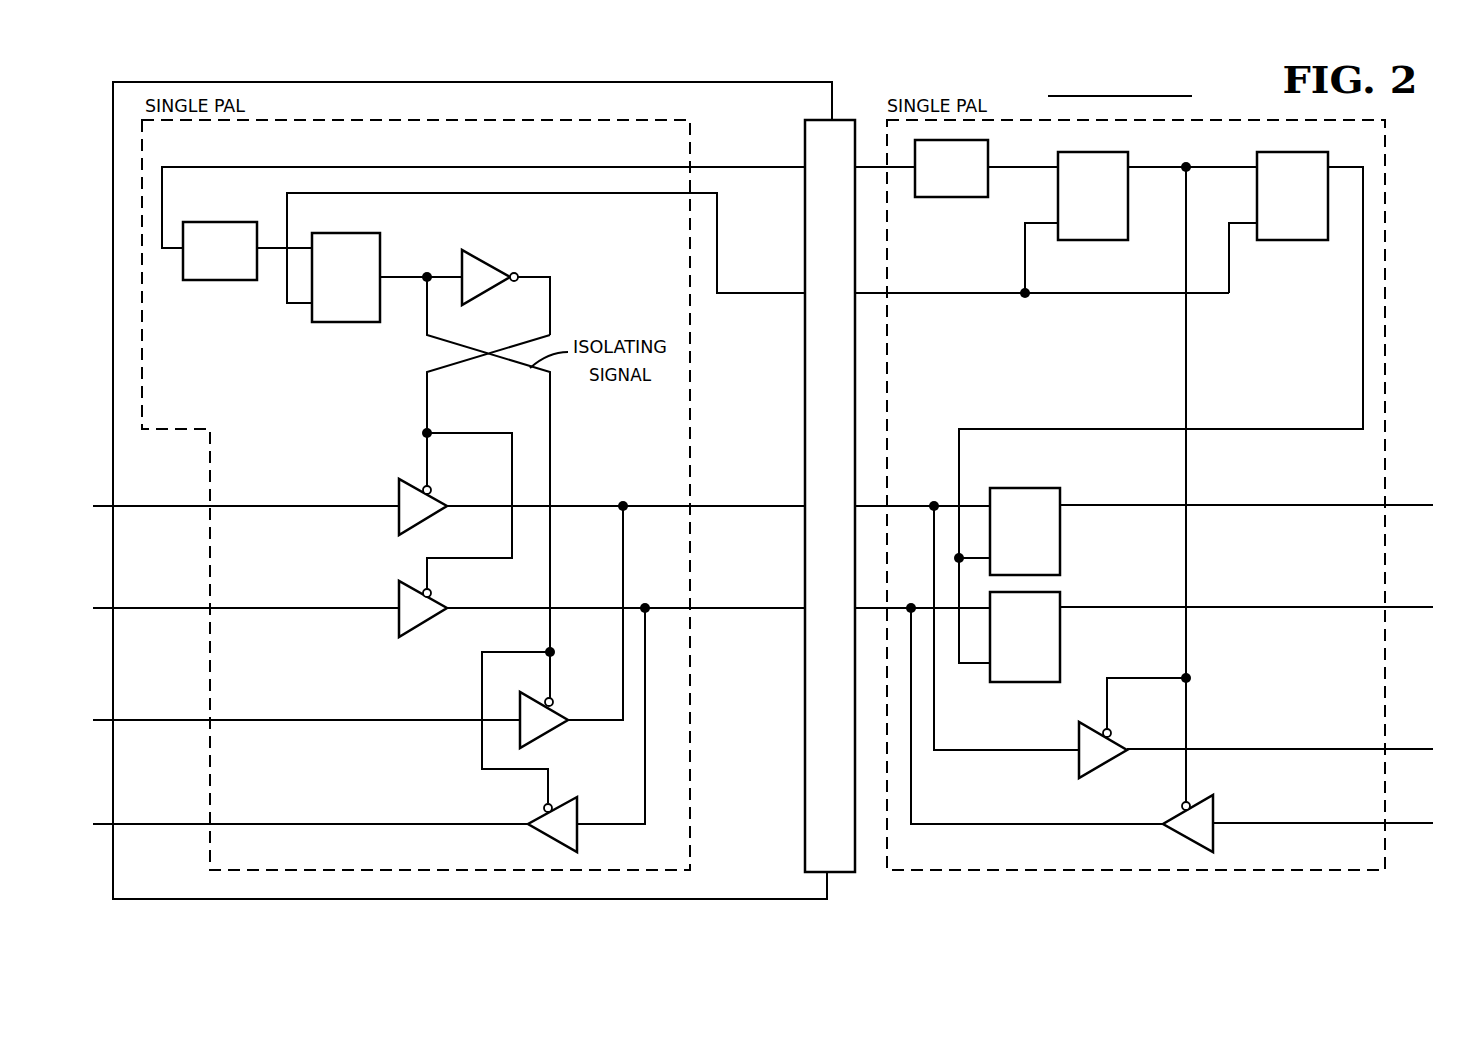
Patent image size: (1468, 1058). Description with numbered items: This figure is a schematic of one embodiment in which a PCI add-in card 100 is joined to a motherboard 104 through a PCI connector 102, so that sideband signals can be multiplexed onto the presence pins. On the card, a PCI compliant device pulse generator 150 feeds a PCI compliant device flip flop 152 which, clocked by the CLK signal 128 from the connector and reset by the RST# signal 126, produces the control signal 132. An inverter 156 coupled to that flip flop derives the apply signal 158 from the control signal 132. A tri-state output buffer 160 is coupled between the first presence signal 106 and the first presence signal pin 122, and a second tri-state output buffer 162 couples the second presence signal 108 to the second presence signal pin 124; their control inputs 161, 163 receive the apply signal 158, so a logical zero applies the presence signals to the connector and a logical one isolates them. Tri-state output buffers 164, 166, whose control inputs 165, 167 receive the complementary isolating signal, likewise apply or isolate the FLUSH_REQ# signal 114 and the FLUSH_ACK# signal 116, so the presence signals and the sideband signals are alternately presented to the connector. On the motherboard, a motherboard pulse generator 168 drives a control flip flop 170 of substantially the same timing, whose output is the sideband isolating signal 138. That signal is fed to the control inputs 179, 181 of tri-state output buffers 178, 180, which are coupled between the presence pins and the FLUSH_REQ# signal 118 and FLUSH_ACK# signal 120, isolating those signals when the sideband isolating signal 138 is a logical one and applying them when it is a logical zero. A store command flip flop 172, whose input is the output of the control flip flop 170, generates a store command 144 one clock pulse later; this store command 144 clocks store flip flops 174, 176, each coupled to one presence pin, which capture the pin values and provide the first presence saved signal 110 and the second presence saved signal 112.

The PCI add-in card 100 is at (557, 82).
The PCI connector 102 is at (810, 757).
The motherboard 104 is at (1392, 260).
The PRSNT 1# signal 106 is at (187, 505).
The PRSNT 2# signal 108 is at (187, 607).
The PRSNT 1# saved signal 110 is at (1410, 504).
The PRSNT 2# saved signal 112 is at (1410, 606).
The FLUSH_REQ# signal 114 is at (187, 719).
The FLUSH_ACK# signal 116 is at (187, 823).
The FLUSH_REQ# signal 118 is at (1410, 748).
The FLUSH_ACK# signal 120 is at (1410, 822).
The PRSNT 1# signal pin 122 is at (753, 507).
The PRSNT 2# signal pin 124 is at (753, 609).
The RST# signal 126 is at (774, 168).
The CLK signal 128 is at (762, 294).
The control signal 132 is at (401, 277).
The sideband isolating signal 138 is at (1187, 368).
The store command 144 is at (1088, 430).
The PCI compliant device pulse generator 150 is at (223, 283).
The PCI compliant device flip flop 152 is at (313, 325).
The inverter 156 is at (485, 297).
The apply signal 158 is at (427, 385).
The tri-state output buffer 160 is at (427, 518).
The tri-state output buffer control input 161 is at (437, 489).
The tri-state output buffer 162 is at (413, 632).
The tri-state output buffer control input 163 is at (437, 592).
The tri-state output buffer 164 is at (543, 735).
The tri-state output buffer control input 165 is at (555, 700).
The tri-state output buffer 166 is at (547, 836).
The tri-state output buffer control input 167 is at (541, 808).
The motherboard pulse generator 168 is at (957, 200).
The control flip flop 170 is at (1086, 242).
The store command flip flop 172 is at (1282, 242).
The store flip flop 174 is at (1062, 551).
The store flip flop 176 is at (1062, 645).
The tri-state output buffer 178 is at (1078, 735).
The control input 179 is at (1113, 730).
The tri-state output buffer 180 is at (1170, 837).
The control input 181 is at (1178, 804).